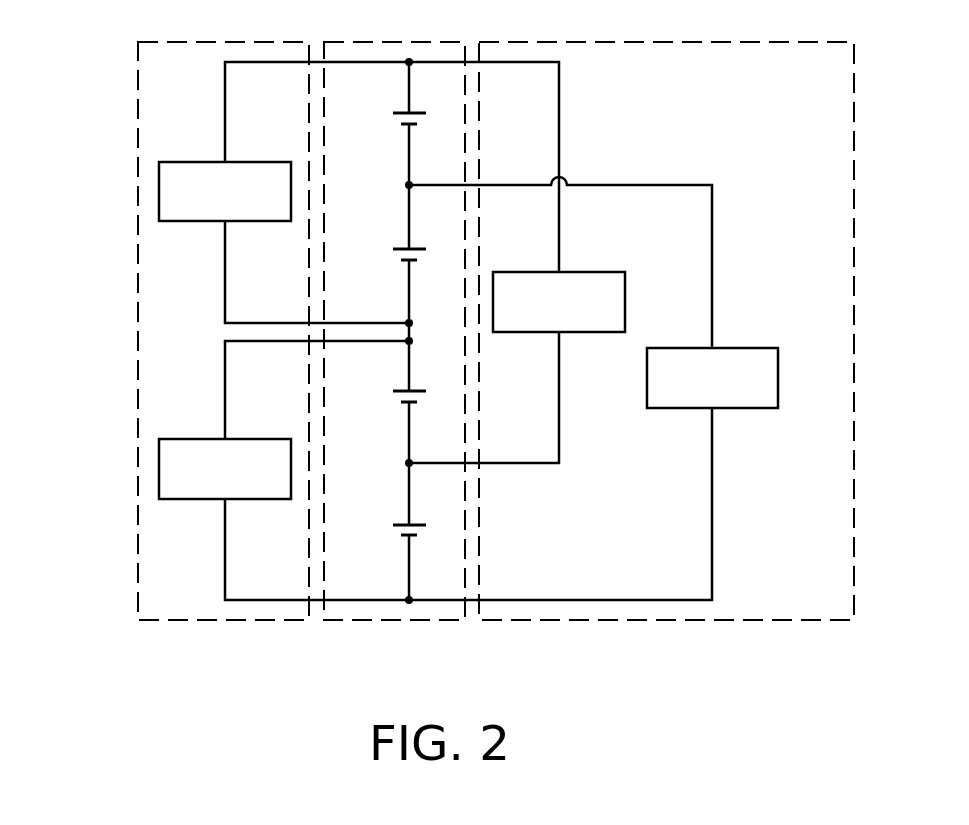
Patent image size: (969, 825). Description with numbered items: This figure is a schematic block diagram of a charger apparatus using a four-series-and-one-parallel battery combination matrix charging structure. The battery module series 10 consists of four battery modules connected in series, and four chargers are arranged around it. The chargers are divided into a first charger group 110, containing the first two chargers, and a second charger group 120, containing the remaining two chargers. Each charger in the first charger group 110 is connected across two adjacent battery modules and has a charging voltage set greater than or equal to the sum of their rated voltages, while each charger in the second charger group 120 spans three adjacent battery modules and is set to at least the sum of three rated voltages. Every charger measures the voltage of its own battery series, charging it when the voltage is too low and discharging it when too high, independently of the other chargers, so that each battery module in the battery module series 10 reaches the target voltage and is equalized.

The battery module series 10 is at (433, 42).
The first charger group 110 is at (235, 42).
The second charger group 120 is at (725, 42).